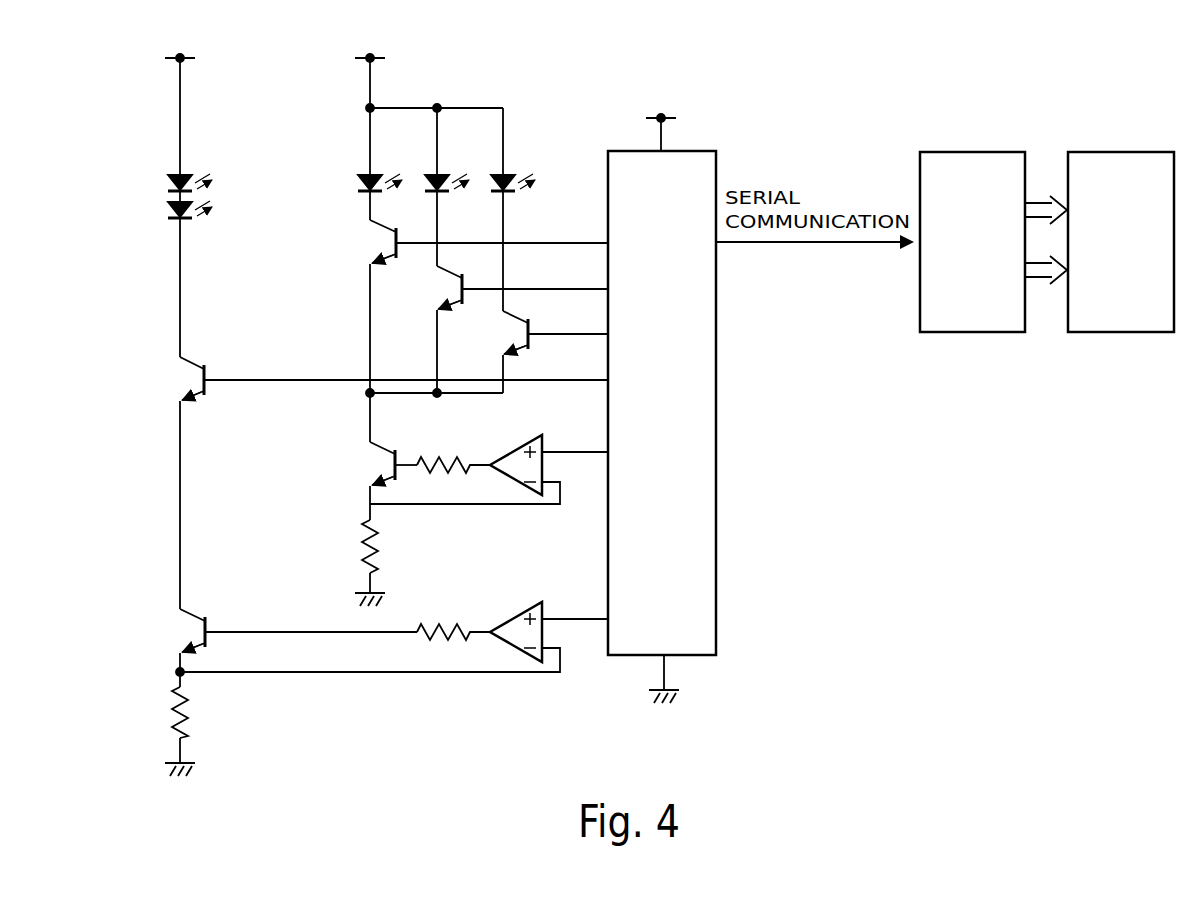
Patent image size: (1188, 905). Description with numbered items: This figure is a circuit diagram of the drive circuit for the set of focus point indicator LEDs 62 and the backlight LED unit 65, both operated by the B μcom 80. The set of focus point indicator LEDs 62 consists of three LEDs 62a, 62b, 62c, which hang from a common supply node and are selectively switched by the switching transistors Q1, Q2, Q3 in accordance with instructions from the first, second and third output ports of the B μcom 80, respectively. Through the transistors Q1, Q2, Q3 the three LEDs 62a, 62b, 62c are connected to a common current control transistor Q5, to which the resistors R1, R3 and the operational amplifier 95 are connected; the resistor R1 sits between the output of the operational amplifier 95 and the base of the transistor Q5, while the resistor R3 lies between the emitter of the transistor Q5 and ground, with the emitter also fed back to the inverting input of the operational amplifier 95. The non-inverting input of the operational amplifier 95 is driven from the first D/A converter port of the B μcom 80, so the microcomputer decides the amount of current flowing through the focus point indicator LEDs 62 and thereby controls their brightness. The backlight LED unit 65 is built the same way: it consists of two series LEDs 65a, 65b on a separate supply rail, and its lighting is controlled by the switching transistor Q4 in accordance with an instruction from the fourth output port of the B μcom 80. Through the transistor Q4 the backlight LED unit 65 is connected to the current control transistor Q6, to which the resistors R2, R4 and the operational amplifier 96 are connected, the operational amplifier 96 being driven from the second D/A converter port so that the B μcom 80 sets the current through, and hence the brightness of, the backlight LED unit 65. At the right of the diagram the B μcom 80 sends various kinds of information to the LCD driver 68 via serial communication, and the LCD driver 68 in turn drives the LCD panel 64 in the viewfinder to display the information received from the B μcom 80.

The set of focus point indicator LEDs 62 is at (427, 109).
The LED 62a is at (362, 174).
The LED 62b is at (429, 174).
The LED 62c is at (495, 174).
The backlight LED unit 65 is at (189, 195).
The LED 65a is at (162, 184).
The LED 65b is at (162, 212).
The B μcom 80 is at (705, 151).
The LCD driver 68 is at (970, 152).
The LCD panel 64 is at (1120, 152).
The operational amplifier 95 is at (509, 452).
The operational amplifier 96 is at (509, 619).
The switching transistor Q1 is at (376, 243).
The switching transistor Q2 is at (444, 289).
The switching transistor Q3 is at (511, 334).
The switching transistor Q4 is at (181, 380).
The current control transistor Q5 is at (379, 465).
The current control transistor Q6 is at (181, 632).
The resistor R1 is at (442, 455).
The resistor R2 is at (442, 622).
The resistor R3 is at (357, 545).
The resistor R4 is at (171, 710).